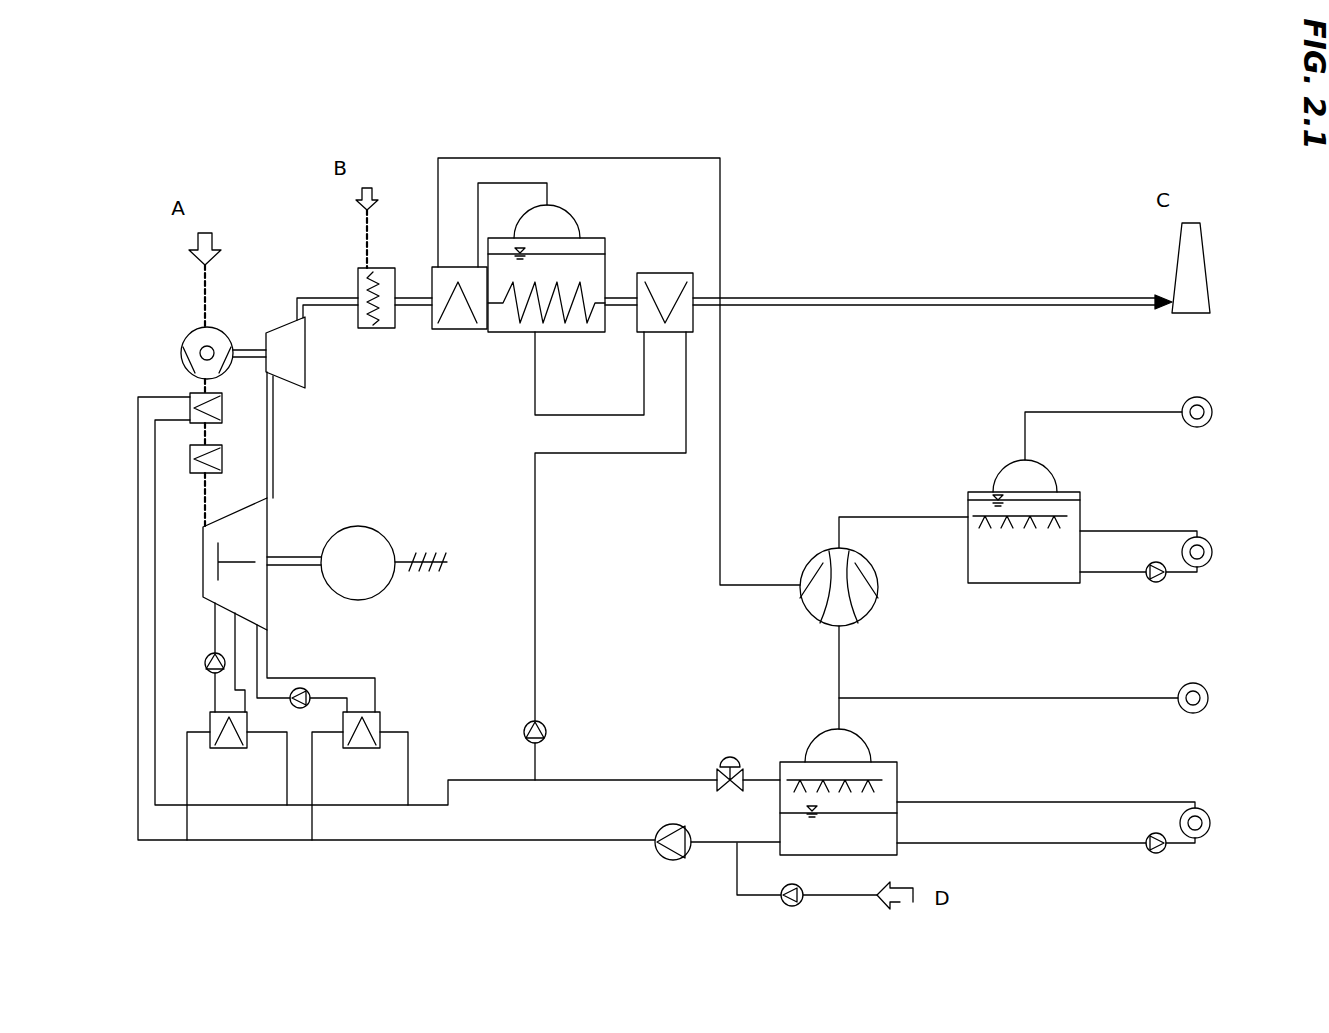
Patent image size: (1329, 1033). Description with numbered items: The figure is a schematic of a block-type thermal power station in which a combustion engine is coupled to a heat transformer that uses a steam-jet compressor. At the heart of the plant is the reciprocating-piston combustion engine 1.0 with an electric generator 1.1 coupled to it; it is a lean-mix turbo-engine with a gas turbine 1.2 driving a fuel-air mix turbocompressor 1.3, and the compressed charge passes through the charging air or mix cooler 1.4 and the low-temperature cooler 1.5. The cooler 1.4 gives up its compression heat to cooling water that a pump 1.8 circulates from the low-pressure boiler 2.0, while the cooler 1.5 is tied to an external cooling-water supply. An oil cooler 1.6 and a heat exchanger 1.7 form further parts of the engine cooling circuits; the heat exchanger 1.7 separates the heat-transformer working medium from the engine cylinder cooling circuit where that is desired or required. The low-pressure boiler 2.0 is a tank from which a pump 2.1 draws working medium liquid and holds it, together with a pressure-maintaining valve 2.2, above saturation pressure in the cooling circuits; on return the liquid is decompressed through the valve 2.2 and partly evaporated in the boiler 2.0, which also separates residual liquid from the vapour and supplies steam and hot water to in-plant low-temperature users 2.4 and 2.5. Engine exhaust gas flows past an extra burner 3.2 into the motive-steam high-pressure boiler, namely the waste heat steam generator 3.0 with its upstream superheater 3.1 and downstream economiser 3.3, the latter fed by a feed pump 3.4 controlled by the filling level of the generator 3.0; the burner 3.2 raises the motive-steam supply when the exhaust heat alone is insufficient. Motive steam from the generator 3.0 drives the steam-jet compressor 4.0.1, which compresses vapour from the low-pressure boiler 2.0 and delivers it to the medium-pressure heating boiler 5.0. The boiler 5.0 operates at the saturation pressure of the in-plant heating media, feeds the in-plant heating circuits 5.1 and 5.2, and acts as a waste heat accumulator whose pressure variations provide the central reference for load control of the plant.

The reciprocating-piston combustion engine 1.0 is at (262, 564).
The electric generator 1.1 is at (384, 557).
The gas turbine 1.2 is at (269, 352).
The fuel-air mix turbocompressor 1.3 is at (192, 350).
The charging air or mix cooler 1.4 is at (220, 408).
The low-temperature cooler 1.5 is at (220, 459).
The oil cooler 1.6 is at (230, 745).
The heat exchanger 1.7 is at (363, 745).
The pump 1.8 is at (712, 854).
The low-pressure boiler 2.0 is at (850, 790).
The pump 2.1 is at (807, 886).
The pressure-maintaining valve 2.2 is at (734, 758).
The in-plant low-temperature user 2.4 is at (1056, 815).
The in-plant low-temperature user 2.5 is at (1198, 685).
The waste heat steam generator 3.0 is at (546, 283).
The superheater 3.1 is at (459, 314).
The extra burner 3.2 is at (379, 314).
The economiser 3.3 is at (665, 317).
The feed pump 3.4 is at (556, 732).
The steam-jet compressor 4.0.1 is at (866, 587).
The medium-pressure heating boiler 5.0 is at (1072, 497).
The in-plant heating circuit 5.1 is at (1149, 544).
The in-plant heating circuit 5.2 is at (1200, 401).